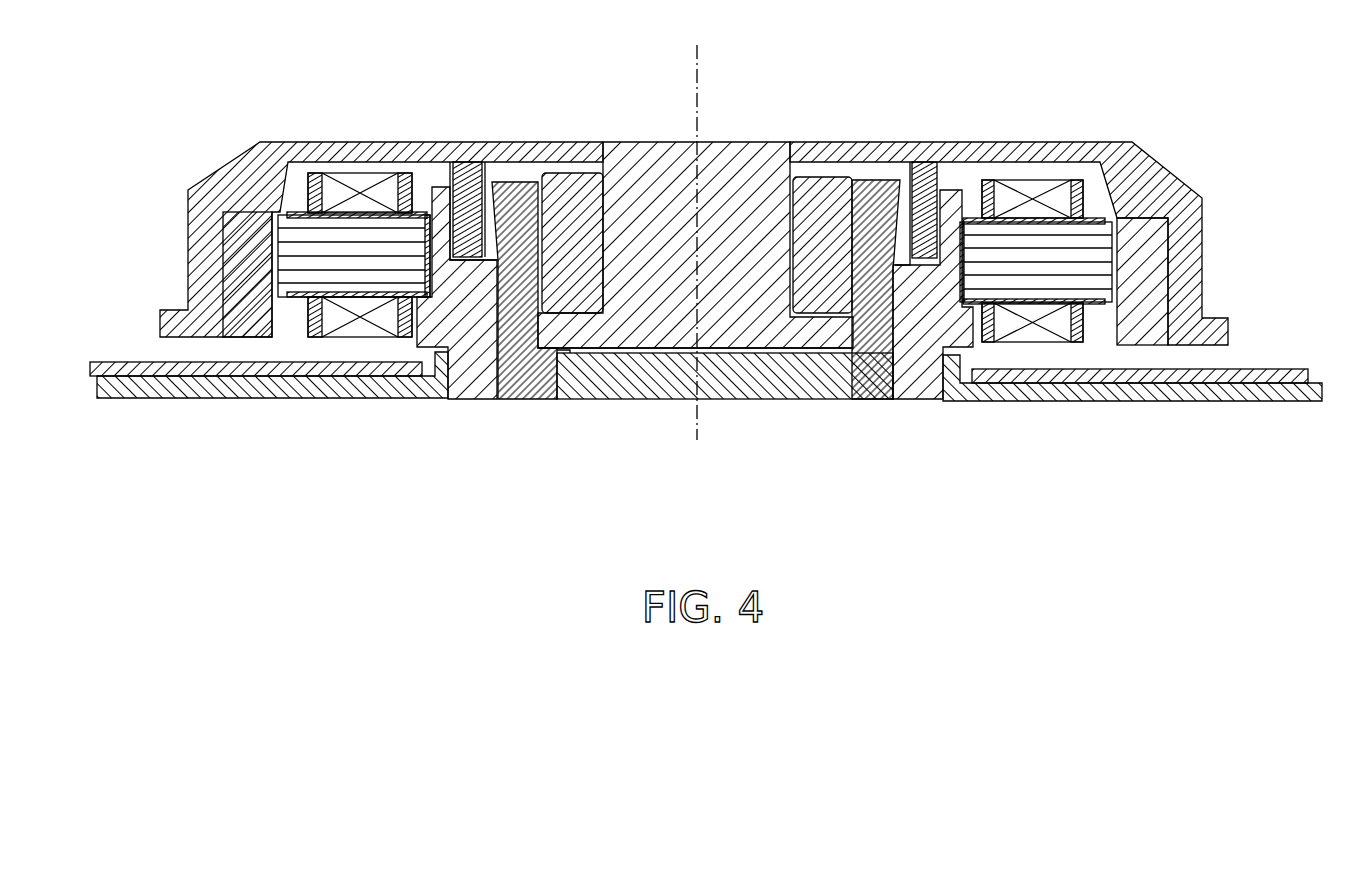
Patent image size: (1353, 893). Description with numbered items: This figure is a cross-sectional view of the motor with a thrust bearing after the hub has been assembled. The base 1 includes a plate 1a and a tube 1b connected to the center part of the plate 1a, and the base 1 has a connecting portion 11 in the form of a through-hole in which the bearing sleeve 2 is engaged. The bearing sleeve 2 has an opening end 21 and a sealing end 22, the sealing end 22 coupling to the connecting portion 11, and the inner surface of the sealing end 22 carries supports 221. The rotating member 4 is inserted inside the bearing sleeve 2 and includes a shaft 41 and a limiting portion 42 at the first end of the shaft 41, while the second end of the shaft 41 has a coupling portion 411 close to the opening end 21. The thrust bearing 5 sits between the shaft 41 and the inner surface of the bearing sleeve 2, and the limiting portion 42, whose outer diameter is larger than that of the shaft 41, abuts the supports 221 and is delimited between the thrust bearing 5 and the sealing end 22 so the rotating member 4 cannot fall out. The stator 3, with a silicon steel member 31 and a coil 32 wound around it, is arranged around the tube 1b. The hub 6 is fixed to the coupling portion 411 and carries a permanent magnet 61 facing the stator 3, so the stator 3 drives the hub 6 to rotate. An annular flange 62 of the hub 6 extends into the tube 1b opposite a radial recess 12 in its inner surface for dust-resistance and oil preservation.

The base 1 is at (269, 450).
The plate 1a is at (227, 392).
The tube 1b is at (417, 338).
The connecting portion 11 is at (893, 368).
The radial recess 12 is at (453, 172).
The bearing sleeve 2 is at (509, 182).
The opening end 21 is at (855, 210).
The sealing end 22 is at (714, 439).
The supports 221 is at (568, 352).
The stator 3 is at (1111, 203).
The silicon steel member 31 is at (1105, 257).
The coil 32 is at (1038, 188).
The rotating member 4 is at (699, 270).
The shaft 41 is at (728, 175).
The coupling portion 411 is at (590, 173).
The limiting portion 42 is at (825, 335).
The thrust bearing 5 is at (823, 188).
The hub 6 is at (964, 143).
The permanent magnet 61 is at (1152, 292).
The annular flange 62 is at (481, 162).